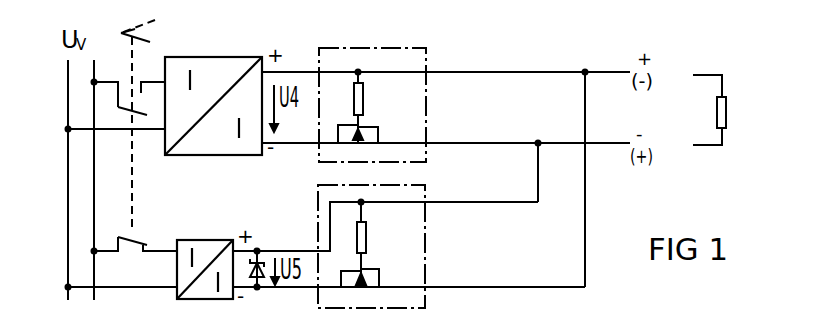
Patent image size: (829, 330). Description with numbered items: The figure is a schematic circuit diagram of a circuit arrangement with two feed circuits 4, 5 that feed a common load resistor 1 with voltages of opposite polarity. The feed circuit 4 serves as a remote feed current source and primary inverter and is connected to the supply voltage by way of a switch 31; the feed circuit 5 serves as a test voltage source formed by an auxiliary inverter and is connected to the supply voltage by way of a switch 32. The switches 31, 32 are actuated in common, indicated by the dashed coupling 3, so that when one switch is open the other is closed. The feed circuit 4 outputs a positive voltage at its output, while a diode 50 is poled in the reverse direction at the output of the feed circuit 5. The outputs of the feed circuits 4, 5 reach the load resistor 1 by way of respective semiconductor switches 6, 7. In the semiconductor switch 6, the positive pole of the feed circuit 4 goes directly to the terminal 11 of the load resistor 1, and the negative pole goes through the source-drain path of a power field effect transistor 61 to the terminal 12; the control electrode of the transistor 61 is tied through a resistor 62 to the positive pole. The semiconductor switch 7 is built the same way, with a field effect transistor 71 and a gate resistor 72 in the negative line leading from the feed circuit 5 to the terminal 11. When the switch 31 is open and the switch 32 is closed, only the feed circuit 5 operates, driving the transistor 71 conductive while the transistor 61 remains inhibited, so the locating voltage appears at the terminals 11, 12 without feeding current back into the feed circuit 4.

The load resistor 1 is at (727, 115).
The switch actuator 3 is at (138, 126).
The feed circuit 4 is at (213, 90).
The feed circuit 5 is at (205, 254).
The semiconductor switch 6 is at (381, 105).
The semiconductor switch 7 is at (380, 246).
The terminal 11 is at (699, 78).
The terminal 12 is at (698, 145).
The switch 31 is at (129, 104).
The switch 32 is at (135, 231).
The diode 50 is at (258, 250).
The power field effect transistor 61 is at (371, 126).
The resistor 62 is at (370, 93).
The field effect transistor 71 is at (373, 271).
The resistor 72 is at (373, 228).